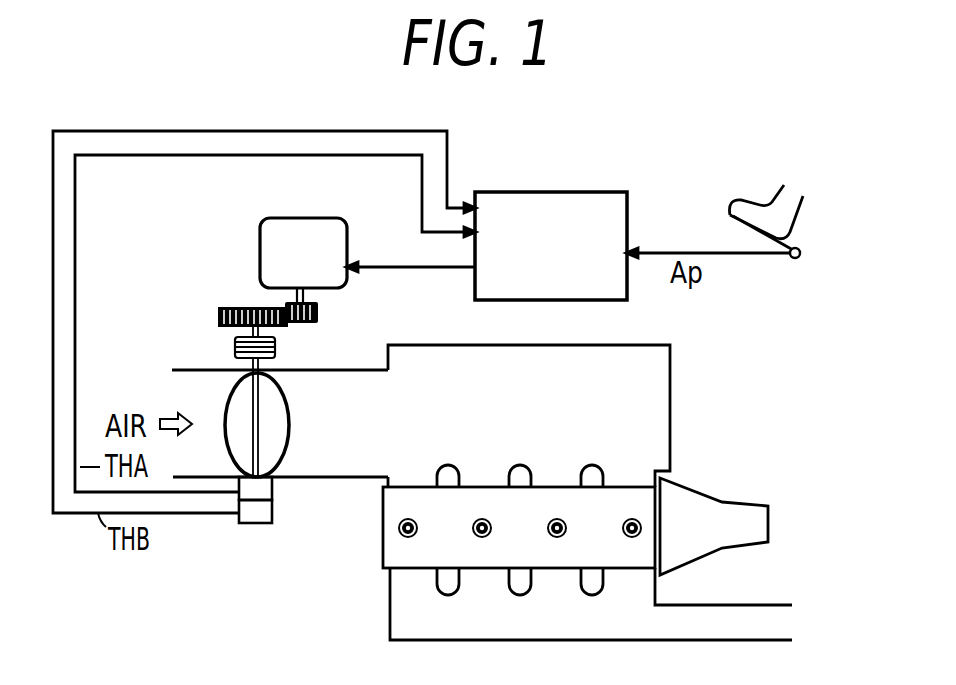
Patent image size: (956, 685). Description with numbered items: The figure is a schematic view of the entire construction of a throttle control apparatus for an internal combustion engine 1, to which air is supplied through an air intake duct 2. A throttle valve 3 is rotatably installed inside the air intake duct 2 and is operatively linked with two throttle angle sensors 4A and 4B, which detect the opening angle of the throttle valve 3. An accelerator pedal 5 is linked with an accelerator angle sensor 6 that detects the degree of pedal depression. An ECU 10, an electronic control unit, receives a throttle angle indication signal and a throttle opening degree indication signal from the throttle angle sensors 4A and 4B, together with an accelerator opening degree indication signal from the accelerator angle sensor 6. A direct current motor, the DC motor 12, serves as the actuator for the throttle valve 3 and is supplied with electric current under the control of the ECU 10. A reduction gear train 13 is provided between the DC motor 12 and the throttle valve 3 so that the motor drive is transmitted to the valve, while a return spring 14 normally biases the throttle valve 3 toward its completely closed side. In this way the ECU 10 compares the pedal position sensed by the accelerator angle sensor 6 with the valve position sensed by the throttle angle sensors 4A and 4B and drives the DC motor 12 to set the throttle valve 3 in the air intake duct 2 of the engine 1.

The internal combustion engine 1 is at (386, 576).
The air intake duct 2 is at (336, 479).
The throttle valve 3 is at (226, 402).
The throttle angle sensor 4A is at (268, 492).
The throttle angle sensor 4B is at (254, 524).
The accelerator pedal 5 is at (738, 217).
The accelerator angle sensor 6 is at (793, 260).
The ECU 10 is at (511, 192).
The DC motor 12 is at (262, 223).
The reduction gear train 13 is at (230, 307).
The return spring 14 is at (235, 344).